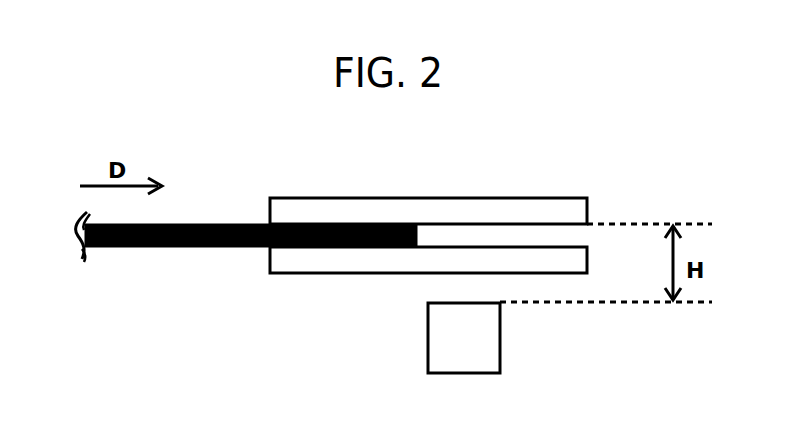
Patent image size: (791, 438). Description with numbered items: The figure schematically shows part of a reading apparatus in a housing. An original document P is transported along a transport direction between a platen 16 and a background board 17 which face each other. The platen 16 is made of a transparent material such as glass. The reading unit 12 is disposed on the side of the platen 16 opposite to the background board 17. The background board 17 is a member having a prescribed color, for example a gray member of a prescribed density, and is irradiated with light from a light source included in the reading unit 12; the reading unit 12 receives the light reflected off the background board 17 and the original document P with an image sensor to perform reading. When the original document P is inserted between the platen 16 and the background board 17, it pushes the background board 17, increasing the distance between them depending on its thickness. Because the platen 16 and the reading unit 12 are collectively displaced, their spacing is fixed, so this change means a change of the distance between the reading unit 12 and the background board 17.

The original document P is at (180, 248).
The background board 17 is at (346, 197).
The platen 16 is at (318, 274).
The reading unit 12 is at (496, 346).